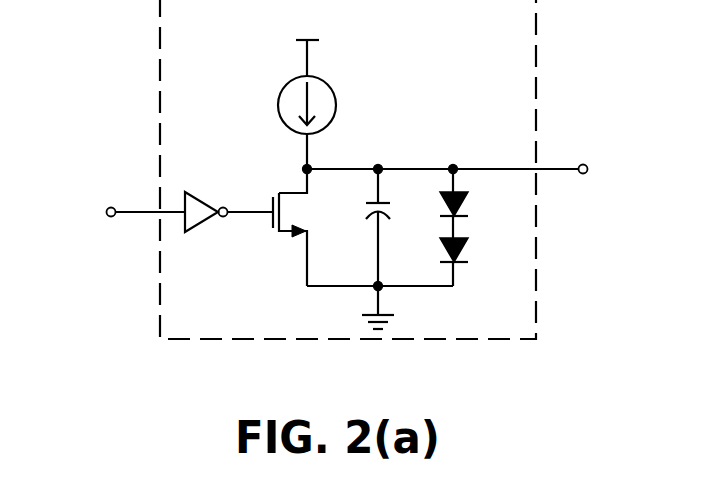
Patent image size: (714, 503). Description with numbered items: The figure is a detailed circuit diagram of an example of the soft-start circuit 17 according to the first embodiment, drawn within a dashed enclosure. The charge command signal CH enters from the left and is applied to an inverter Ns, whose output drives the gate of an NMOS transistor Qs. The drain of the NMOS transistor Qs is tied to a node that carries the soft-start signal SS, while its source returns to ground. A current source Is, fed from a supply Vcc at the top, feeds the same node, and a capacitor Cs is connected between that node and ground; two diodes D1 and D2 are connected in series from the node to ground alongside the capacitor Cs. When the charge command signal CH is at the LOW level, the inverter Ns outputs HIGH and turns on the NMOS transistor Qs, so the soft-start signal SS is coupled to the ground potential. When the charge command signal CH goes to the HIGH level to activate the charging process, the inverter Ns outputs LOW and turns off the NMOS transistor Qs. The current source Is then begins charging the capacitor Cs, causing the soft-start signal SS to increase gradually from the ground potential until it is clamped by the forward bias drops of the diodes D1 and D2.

The soft-start circuit 17 is at (538, 76).
The charge command signal CH is at (119, 212).
The inverter Ns is at (203, 233).
The NMOS transistor Qs is at (273, 192).
The supply voltage Vcc is at (306, 42).
The current source Is is at (337, 97).
The soft-start signal SS is at (470, 172).
The capacitor Cs is at (372, 212).
The diode D1 is at (476, 192).
The diode D2 is at (476, 251).